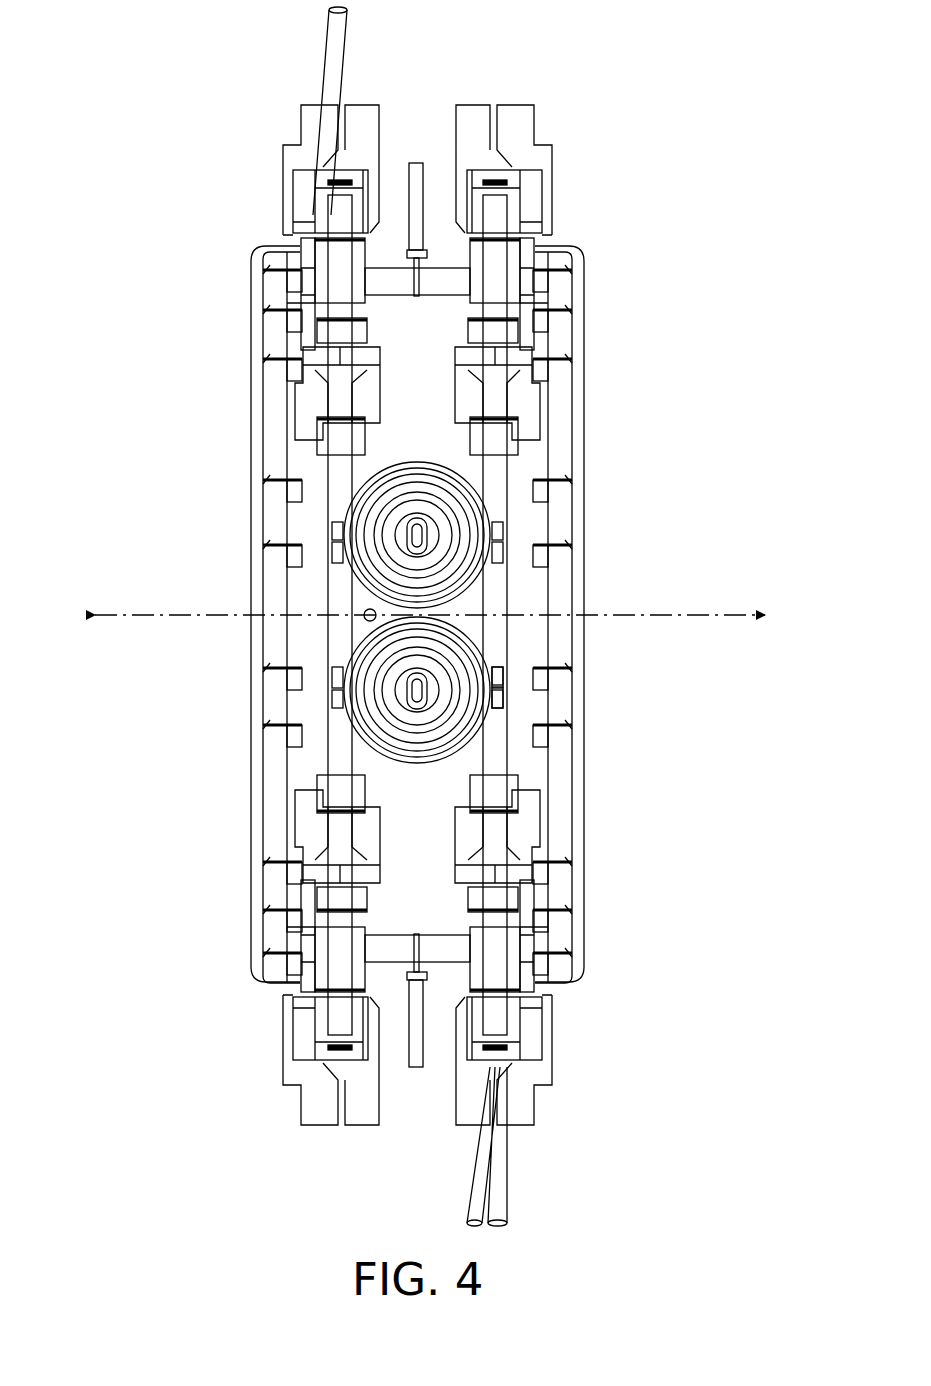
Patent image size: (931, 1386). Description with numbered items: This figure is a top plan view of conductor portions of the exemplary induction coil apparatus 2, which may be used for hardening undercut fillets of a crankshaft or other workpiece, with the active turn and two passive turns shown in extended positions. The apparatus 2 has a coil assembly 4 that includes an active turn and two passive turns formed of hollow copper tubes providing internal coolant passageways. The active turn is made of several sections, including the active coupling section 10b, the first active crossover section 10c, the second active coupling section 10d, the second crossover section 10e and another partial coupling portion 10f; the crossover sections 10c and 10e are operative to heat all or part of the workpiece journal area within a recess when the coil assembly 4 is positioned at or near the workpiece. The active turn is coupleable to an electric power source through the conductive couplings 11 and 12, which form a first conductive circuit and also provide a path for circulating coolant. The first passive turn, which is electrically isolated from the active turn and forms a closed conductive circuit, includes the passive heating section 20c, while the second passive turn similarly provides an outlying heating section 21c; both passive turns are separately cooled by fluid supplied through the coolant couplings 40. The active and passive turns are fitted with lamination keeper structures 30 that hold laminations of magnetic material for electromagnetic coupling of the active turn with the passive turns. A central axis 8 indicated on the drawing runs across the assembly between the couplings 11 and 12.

The induction coil apparatus 2 is at (120, 88).
The coil assembly 4 is at (150, 169).
The section line / axis 8 is at (140, 615).
The active coupling section 10b is at (475, 470).
The first active crossover section 10c is at (445, 287).
The second active coupling section 10d is at (327, 472).
The second crossover section 10e is at (395, 935).
The partial coupling portion 10f is at (470, 760).
The conductive coupling 11 is at (350, 563).
The conductive coupling 12 is at (473, 745).
The passive heating section 20c is at (576, 511).
The outlying heating section 21c is at (258, 527).
The lamination keeper structure 30 is at (283, 178).
The coolant coupling 40 is at (325, 60).